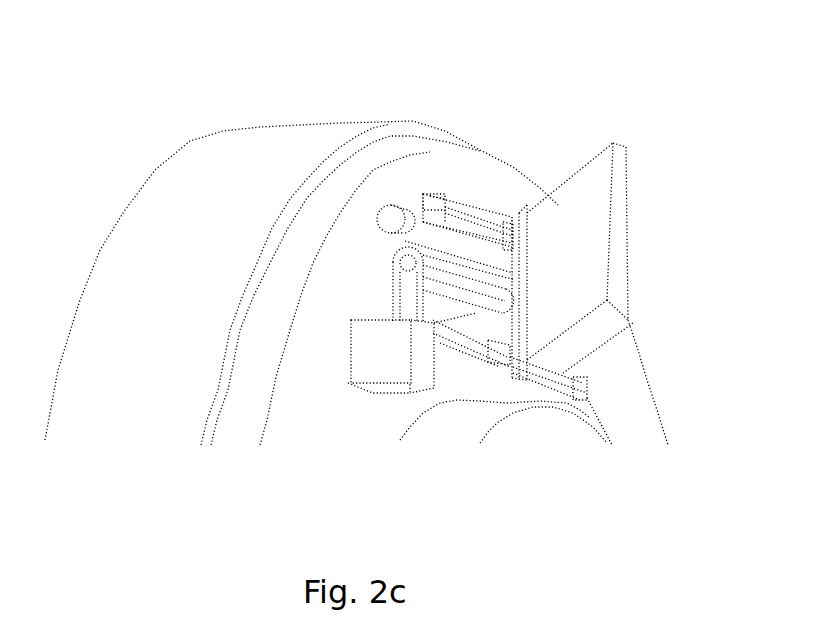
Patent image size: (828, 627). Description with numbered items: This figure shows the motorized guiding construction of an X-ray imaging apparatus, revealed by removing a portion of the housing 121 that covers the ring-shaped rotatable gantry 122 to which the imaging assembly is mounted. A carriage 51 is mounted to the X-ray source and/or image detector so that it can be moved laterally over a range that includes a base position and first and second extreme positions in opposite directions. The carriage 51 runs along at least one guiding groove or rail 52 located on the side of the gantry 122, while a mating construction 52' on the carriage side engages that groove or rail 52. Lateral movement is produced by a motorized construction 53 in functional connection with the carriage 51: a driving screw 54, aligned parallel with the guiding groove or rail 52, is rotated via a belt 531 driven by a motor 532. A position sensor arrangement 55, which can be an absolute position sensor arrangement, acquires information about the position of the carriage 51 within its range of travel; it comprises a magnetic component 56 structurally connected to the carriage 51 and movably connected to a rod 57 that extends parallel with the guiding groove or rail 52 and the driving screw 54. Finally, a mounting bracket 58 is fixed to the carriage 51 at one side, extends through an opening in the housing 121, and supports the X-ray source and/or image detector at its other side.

The housing 121 is at (170, 180).
The gantry 122 is at (622, 360).
The carriage 51 is at (525, 218).
The guiding groove or rail 52 is at (517, 301).
The mating construction 52' is at (486, 399).
The motorized construction 53 is at (331, 292).
The belt 531 is at (396, 303).
The motor 532 is at (388, 387).
The driving screw 54 is at (483, 297).
The position sensor arrangement 55 is at (399, 190).
The magnetic component 56 is at (498, 267).
The rod 57 is at (422, 243).
The mounting bracket 58 is at (624, 200).